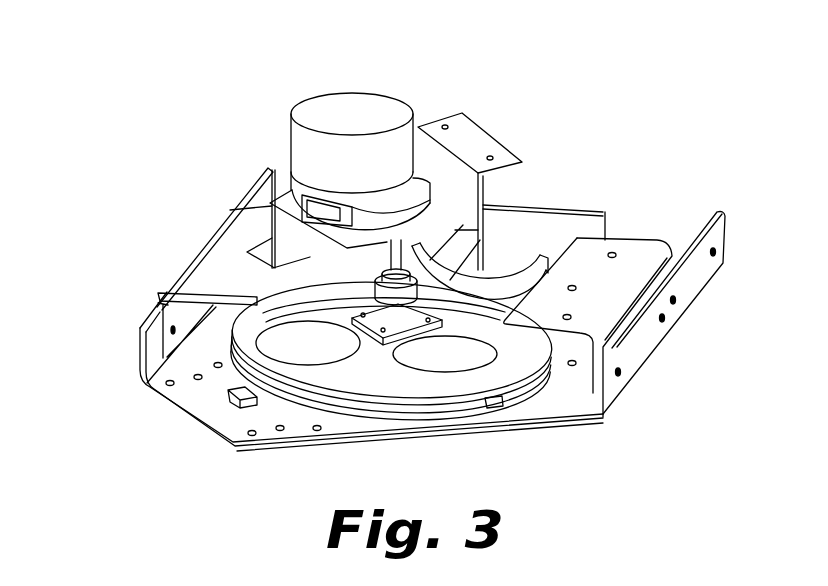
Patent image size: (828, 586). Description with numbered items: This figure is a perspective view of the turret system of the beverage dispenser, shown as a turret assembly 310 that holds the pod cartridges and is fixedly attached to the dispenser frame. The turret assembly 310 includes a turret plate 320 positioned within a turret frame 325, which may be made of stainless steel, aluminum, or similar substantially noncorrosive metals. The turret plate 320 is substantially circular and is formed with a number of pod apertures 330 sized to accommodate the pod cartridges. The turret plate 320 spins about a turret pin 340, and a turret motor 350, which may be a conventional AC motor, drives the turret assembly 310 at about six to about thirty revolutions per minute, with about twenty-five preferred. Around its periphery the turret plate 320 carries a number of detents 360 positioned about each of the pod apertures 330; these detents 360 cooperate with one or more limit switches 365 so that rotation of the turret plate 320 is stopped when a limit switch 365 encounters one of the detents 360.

The turret assembly 310 is at (146, 141).
The turret plate 320 is at (407, 424).
The turret frame 325 is at (640, 243).
The pod apertures 330 is at (278, 343).
The turret pin 340 is at (399, 251).
The turret motor 350 is at (374, 96).
The detents 360 is at (499, 415).
The limit switches 365 is at (225, 406).